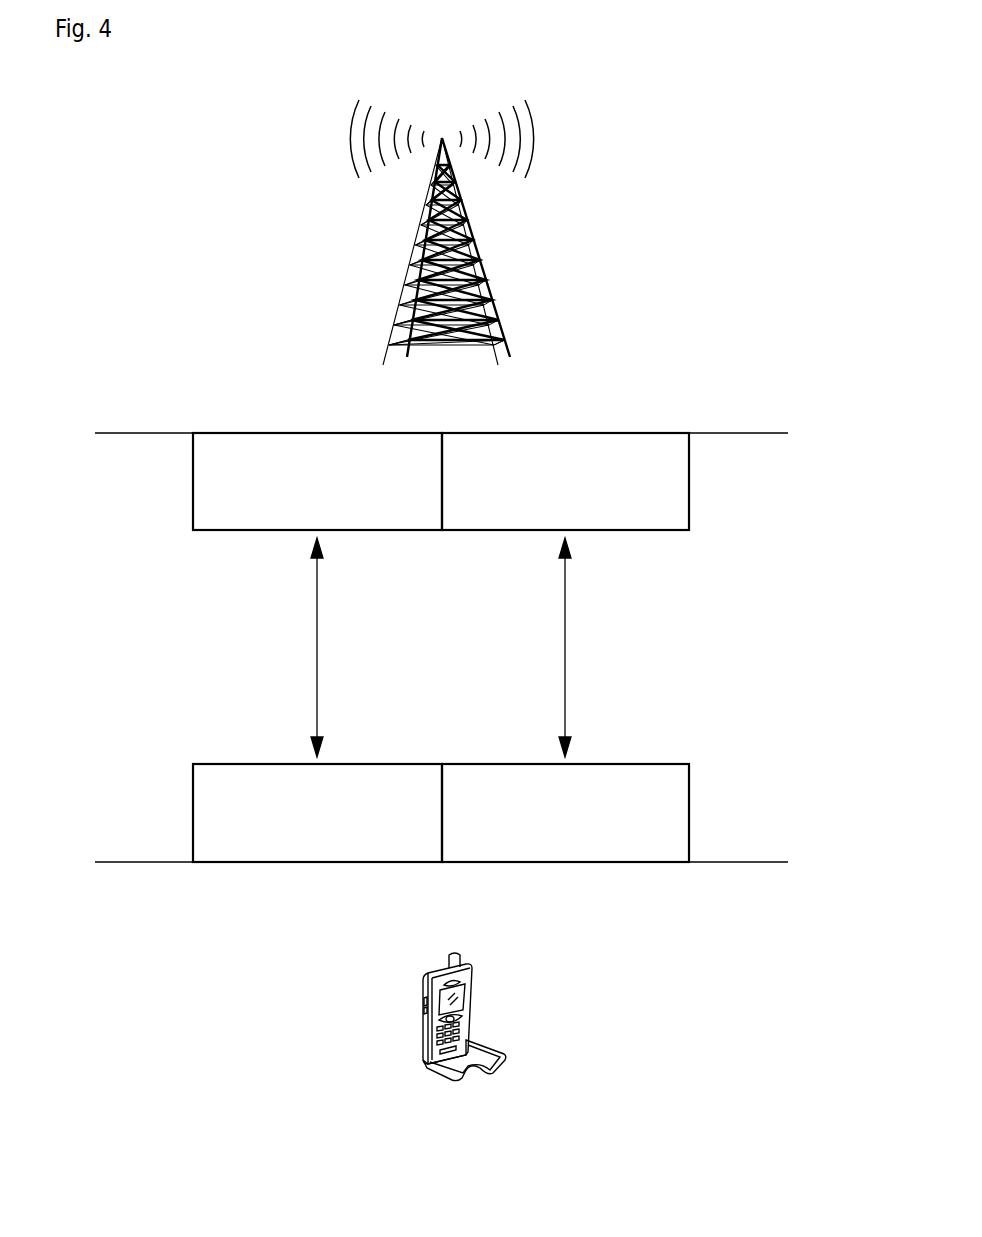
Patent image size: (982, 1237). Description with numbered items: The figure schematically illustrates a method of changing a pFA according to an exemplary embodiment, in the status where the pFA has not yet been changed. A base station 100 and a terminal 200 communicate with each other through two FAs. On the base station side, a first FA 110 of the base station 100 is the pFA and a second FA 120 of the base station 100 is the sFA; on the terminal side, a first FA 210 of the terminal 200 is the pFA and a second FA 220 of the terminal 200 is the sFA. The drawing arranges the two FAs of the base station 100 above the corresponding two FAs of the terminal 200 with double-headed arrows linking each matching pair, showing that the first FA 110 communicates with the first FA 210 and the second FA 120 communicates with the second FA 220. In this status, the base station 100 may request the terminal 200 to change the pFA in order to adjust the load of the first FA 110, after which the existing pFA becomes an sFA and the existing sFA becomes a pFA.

The base station 100 is at (480, 249).
The FA#1 of the base station 110 is at (193, 480).
The FA#2 of the base station 120 is at (689, 480).
The terminal 200 is at (477, 1002).
The FA#1 of the terminal 210 is at (193, 812).
The FA#2 of the terminal 220 is at (689, 812).